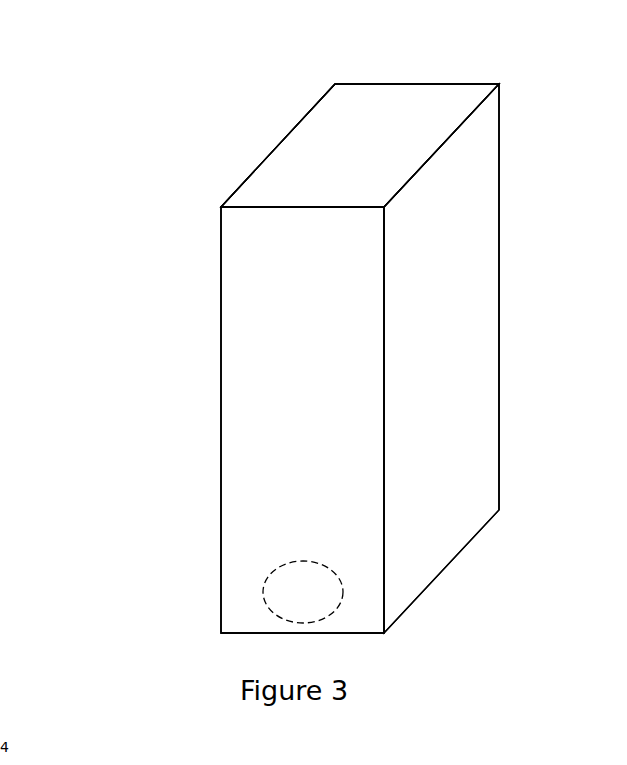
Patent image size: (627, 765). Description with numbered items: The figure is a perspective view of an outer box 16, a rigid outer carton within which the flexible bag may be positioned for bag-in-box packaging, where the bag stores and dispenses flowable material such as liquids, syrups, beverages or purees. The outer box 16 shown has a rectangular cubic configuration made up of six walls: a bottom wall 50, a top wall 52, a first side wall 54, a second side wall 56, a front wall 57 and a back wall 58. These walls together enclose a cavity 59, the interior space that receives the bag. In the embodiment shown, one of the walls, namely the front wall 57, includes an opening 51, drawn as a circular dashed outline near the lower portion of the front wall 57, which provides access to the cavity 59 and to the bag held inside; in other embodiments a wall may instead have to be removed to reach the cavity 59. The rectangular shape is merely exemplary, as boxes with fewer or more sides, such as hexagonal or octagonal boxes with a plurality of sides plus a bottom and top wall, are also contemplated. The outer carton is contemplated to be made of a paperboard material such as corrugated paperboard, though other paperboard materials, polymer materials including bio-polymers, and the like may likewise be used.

The outer box 16 is at (176, 473).
The bottom wall 50 is at (422, 606).
The opening 51 is at (274, 586).
The top wall 52 is at (307, 154).
The first side wall 54 is at (446, 371).
The second side wall 56 is at (246, 172).
The front wall 57 is at (263, 331).
The back wall 58 is at (503, 217).
The cavity 59 is at (383, 159).